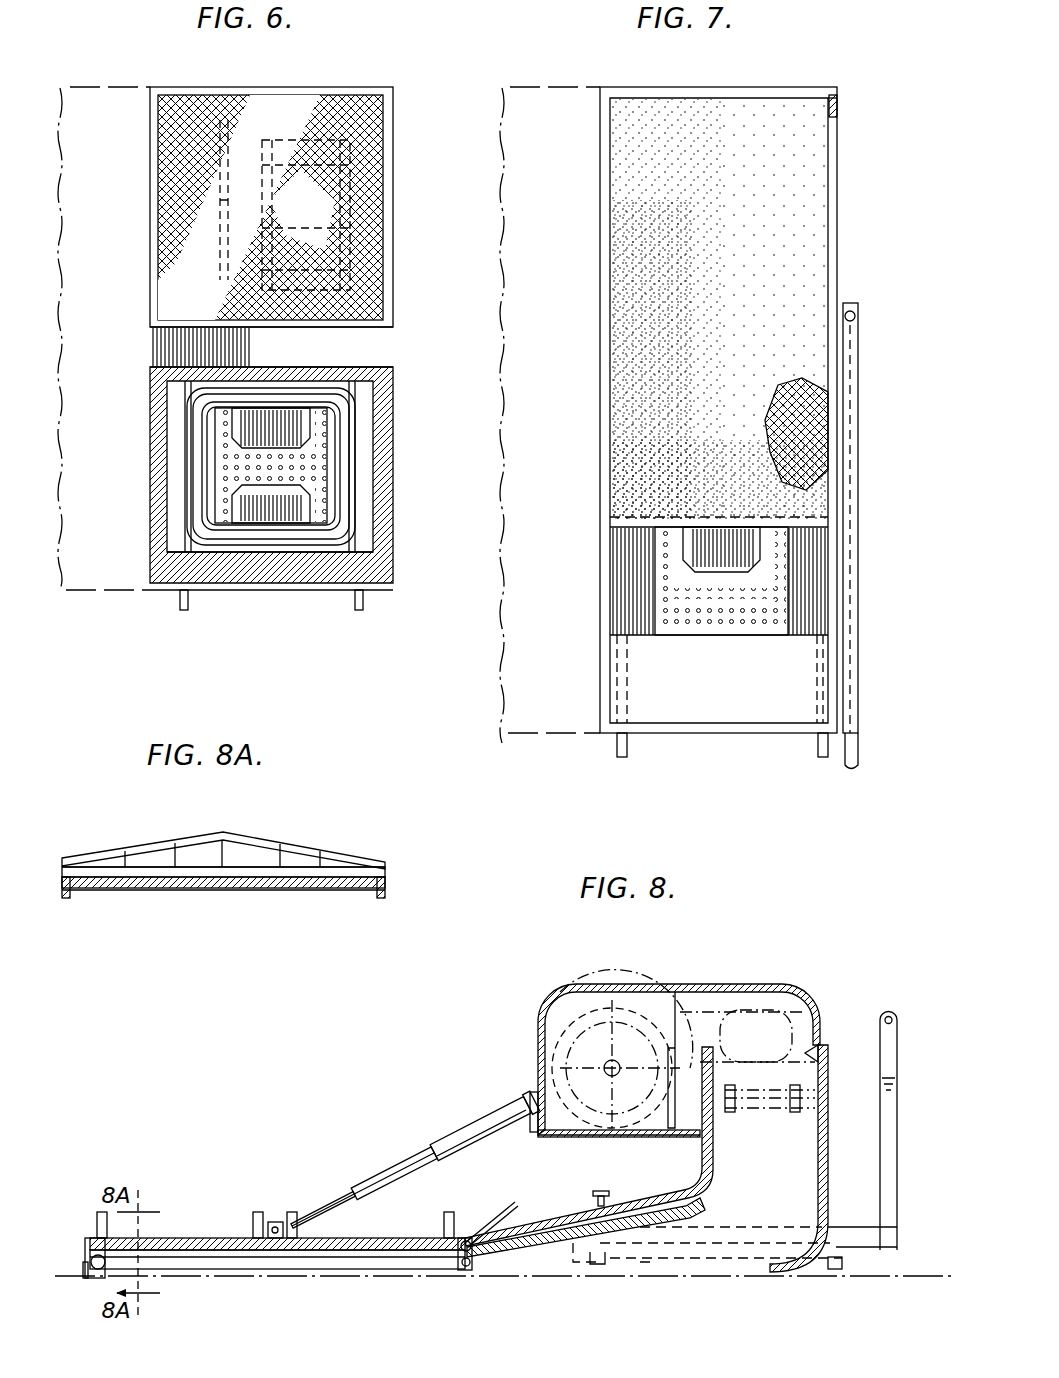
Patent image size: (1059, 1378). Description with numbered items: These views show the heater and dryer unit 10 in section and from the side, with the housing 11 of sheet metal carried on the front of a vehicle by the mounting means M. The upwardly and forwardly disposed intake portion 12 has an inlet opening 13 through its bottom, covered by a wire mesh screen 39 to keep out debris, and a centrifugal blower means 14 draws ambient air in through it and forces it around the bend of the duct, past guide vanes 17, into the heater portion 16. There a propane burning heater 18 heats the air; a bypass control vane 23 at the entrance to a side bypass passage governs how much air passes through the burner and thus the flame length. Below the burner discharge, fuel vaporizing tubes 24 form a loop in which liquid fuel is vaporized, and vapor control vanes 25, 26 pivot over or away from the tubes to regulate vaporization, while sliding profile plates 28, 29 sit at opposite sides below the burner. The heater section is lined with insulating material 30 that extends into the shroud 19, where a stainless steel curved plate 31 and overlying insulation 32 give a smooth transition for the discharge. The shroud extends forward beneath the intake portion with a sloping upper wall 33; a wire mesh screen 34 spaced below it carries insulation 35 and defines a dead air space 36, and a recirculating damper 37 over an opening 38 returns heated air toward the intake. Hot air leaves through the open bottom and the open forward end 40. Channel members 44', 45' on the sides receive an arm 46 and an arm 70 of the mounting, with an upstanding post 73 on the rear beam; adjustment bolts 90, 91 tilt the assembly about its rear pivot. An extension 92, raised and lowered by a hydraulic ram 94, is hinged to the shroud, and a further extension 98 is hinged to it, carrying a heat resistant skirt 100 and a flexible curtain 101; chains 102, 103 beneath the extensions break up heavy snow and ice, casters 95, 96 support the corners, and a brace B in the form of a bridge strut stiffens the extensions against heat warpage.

In FIG. 6, the heater and dryer unit 10 is at (405, 80).
In FIG. 7, the heater and dryer unit 10 is at (822, 87).
In FIG. 8, the heater and dryer unit 10 is at (733, 968).
In FIG. 6, the housing 11 is at (396, 338).
In FIG. 8, the housing 11 is at (790, 985).
In FIG. 6, the intake portion 12 is at (285, 87).
In FIG. 8, the intake portion 12 is at (538, 1028).
In FIG. 6, the inlet opening 13 is at (377, 200).
In FIG. 8, the inlet opening 13 is at (532, 1095).
In FIG. 6, the blower means 14 is at (245, 105).
In FIG. 8, the blower means 14 is at (612, 1066).
In FIG. 6, the heater portion 16 is at (393, 390).
In FIG. 8, the heater portion 16 is at (828, 1110).
In FIG. 8, the guide vanes 17 is at (741, 1060).
In FIG. 6, the heater 18 is at (285, 428).
In FIG. 7, the heater 18 is at (707, 640).
In FIG. 7, the shroud 19 is at (848, 240).
In FIG. 8, the shroud 19 is at (830, 1205).
In FIG. 8, the bypass control vane 23 is at (818, 1058).
In FIG. 6, the fuel vaporizing tubes 24 is at (205, 500).
In FIG. 6, the vapor control vane 25 is at (218, 430).
In FIG. 6, the vapor control vane 26 is at (333, 428).
In FIG. 8, the sliding profile plate 28 is at (720, 1140).
In FIG. 8, the sliding profile plate 29 is at (840, 1140).
In FIG. 6, the insulating material 30 is at (385, 500).
In FIG. 8, the insulating material 30 is at (706, 1172).
In FIG. 7, the curved plate 31 is at (800, 655).
In FIG. 8, the curved plate 31 is at (835, 1252).
In FIG. 8, the insulation 32 is at (805, 1250).
In FIG. 8, the upper wall 33 is at (540, 1225).
In FIG. 7, the wire mesh screen 34 is at (822, 440).
In FIG. 8, the wire mesh screen 34 is at (695, 1185).
In FIG. 7, the insulation 35 is at (810, 205).
In FIG. 8A, the insulation 35 is at (305, 890).
In FIG. 8, the insulation 35 is at (715, 1205).
In FIG. 8, the dead air space 36 is at (660, 1212).
In FIG. 8, the recirculating damper 37 is at (485, 1225).
In FIG. 8, the opening 38 is at (503, 1222).
In FIG. 8, the wire mesh screen 39 is at (575, 1137).
In FIG. 8, the forward end 40 is at (92, 1262).
In FIG. 8, the channel member 44' is at (707, 1271).
In FIG. 7, the channel member 45' is at (884, 518).
In FIG. 8, the arm 46 is at (890, 1230).
In FIG. 7, the arm 70 is at (860, 755).
In FIG. 8, the upstanding post 73 is at (898, 1086).
In FIG. 8, the adjustment bolt 90 is at (600, 1190).
In FIG. 8, the adjustment bolt 91 is at (597, 1266).
In FIG. 8, the extension 92 is at (375, 1238).
In FIG. 8, the hydraulic ram 94 is at (400, 1168).
In FIG. 8, the caster 95 is at (828, 1276).
In FIG. 8, the caster 96 is at (95, 1272).
In FIG. 8A, the extension 98 is at (385, 884).
In FIG. 8, the extension 98 is at (178, 1238).
In FIG. 8, the heat resistant skirt 100 is at (242, 1269).
In FIG. 8, the curtain 101 is at (83, 1268).
In FIG. 8, the chain 102 is at (115, 1270).
In FIG. 8, the chain 103 is at (452, 1268).
In FIG. 8A, the brace B is at (300, 852).
In FIG. 8, the brace B is at (100, 1212).
In FIG. 8, the mounting means M is at (903, 1200).